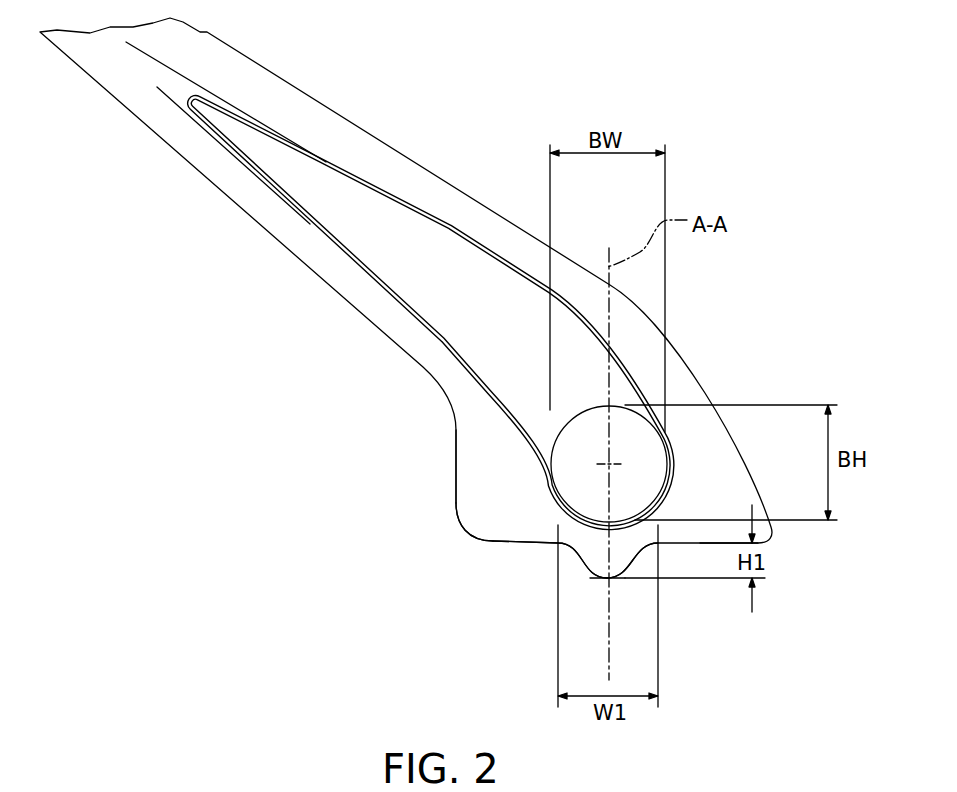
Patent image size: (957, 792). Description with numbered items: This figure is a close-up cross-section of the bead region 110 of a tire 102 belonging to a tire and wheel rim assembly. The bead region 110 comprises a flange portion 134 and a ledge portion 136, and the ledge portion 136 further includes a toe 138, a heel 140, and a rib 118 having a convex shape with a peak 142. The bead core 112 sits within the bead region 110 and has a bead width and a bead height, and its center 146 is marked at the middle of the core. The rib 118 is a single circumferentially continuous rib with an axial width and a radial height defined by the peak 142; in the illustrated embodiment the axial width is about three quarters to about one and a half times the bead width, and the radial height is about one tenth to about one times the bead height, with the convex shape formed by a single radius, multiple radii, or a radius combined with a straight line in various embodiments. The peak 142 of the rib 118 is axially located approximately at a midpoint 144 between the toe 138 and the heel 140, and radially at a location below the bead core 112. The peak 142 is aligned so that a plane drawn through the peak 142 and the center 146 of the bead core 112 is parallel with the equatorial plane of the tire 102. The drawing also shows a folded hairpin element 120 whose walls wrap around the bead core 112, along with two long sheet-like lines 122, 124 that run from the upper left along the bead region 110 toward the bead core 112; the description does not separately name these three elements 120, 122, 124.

The tire 102 is at (168, 300).
The bead region 110 is at (382, 393).
The bead core 112 is at (643, 442).
The rib 118 is at (593, 565).
The folded hairpin portion 120 is at (278, 191).
The sheet 122 is at (167, 93).
The sheet wall 124 is at (565, 302).
The flange portion 134 is at (477, 482).
The ledge portion 136 is at (522, 525).
The toe 138 is at (769, 527).
The heel 140 is at (468, 525).
The peak 142 is at (610, 556).
The midpoint 144 is at (611, 553).
The center 146 is at (623, 448).